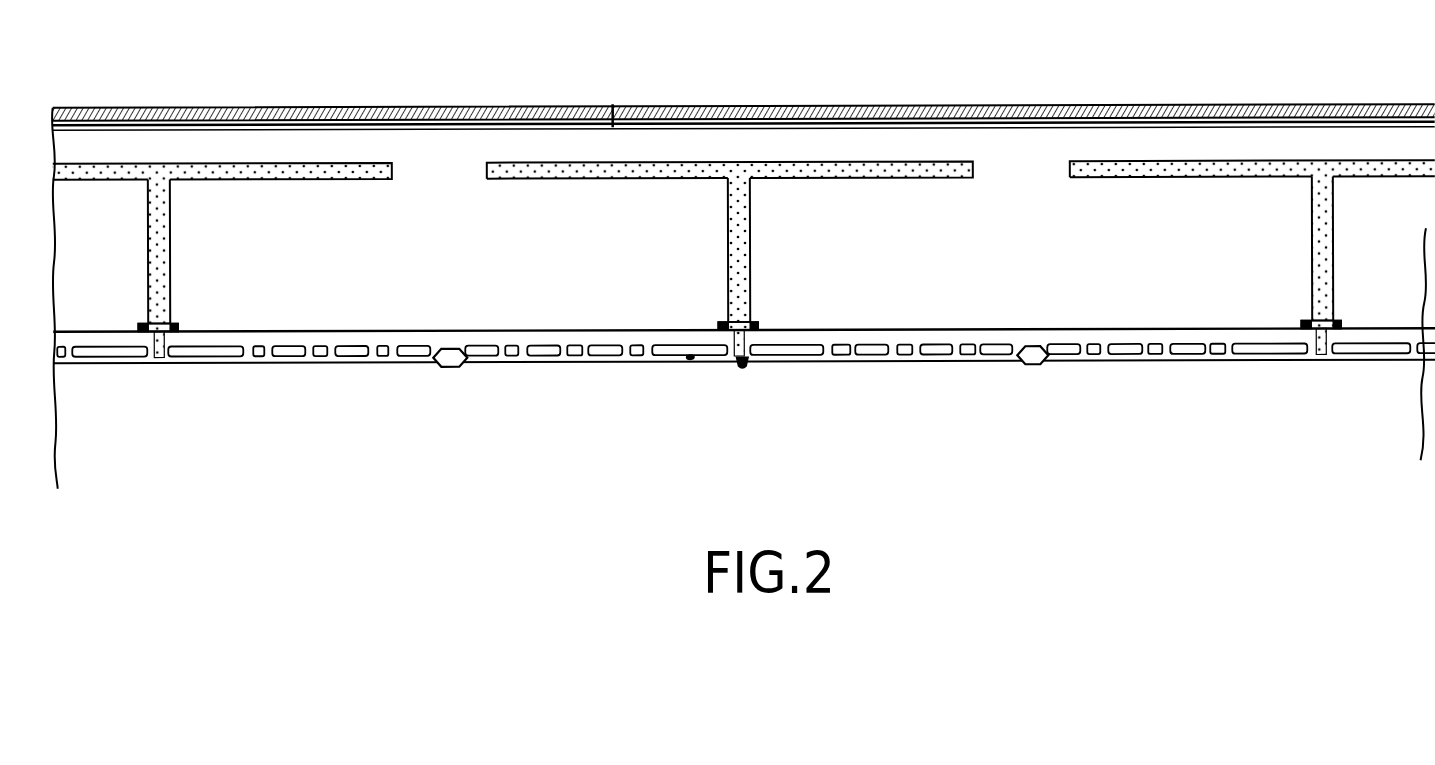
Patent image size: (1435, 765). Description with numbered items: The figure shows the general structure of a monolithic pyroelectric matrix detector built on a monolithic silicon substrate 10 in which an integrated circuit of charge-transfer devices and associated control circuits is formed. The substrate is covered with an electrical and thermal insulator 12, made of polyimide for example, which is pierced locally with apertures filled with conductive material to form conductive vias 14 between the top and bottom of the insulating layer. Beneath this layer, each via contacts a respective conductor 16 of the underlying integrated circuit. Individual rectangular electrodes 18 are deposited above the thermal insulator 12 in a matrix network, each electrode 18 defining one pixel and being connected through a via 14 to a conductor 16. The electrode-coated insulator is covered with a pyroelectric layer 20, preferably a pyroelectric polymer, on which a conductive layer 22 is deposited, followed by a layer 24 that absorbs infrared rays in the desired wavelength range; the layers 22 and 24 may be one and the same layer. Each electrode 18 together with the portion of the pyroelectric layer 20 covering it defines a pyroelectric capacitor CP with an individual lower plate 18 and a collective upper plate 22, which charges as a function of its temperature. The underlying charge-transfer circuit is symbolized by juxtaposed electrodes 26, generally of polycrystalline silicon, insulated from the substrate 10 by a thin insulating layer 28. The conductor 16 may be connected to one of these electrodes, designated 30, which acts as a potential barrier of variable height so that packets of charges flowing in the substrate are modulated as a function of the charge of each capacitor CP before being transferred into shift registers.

The monolithic silicon substrate 10 is at (80, 437).
The electrical and thermal insulator 12 is at (90, 275).
The conductive via 14 is at (165, 250).
The conductor 16 is at (176, 318).
The individual rectangular electrode 18 is at (396, 157).
The pyroelectric layer 20 is at (343, 110).
The conductive layer 22 is at (616, 104).
The infrared absorbing layer 24 is at (752, 105).
The juxtaposed electrodes 26 is at (667, 356).
The thin insulating layer 28 is at (698, 358).
The electrode 30 is at (742, 368).
The pyroelectric capacitor CP is at (981, 152).